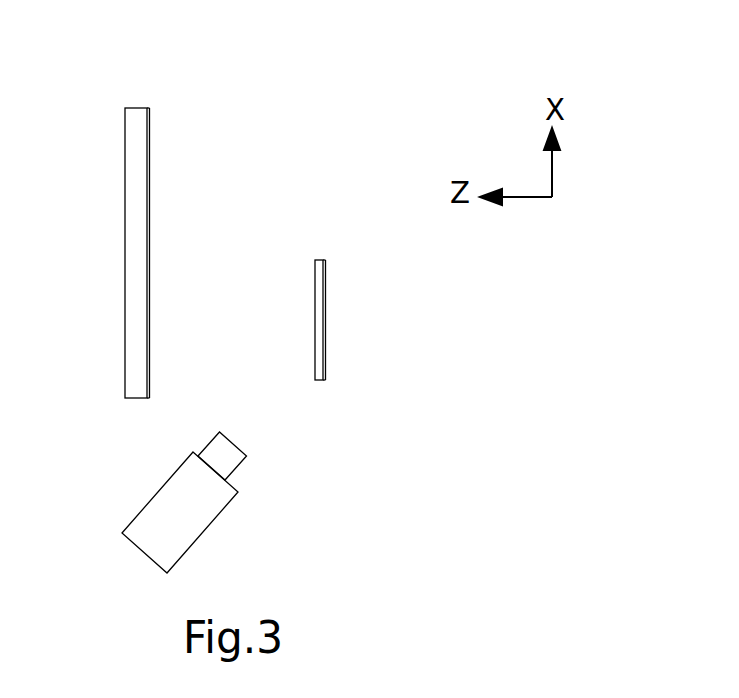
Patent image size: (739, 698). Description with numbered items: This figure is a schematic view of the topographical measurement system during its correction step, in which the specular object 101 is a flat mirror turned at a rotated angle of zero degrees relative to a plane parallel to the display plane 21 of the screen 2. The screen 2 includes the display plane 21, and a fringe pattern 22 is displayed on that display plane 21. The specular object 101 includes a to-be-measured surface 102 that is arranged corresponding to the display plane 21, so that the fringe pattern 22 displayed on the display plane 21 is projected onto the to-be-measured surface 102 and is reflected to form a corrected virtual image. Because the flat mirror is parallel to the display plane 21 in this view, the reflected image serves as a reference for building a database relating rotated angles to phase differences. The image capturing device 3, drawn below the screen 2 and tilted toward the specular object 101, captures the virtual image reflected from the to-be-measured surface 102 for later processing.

The screen 2 is at (162, 206).
The display plane 21 is at (150, 142).
The fringe pattern 22 is at (148, 264).
The specular object 101 is at (342, 287).
The to-be-measured surface 102 is at (315, 363).
The image capturing device 3 is at (192, 548).